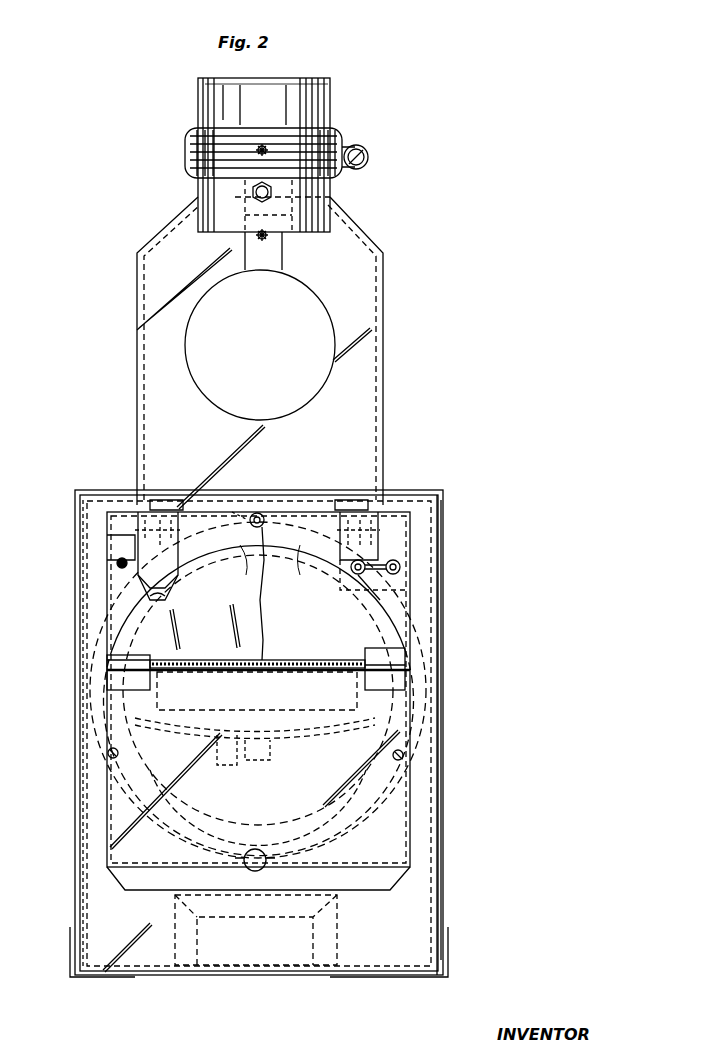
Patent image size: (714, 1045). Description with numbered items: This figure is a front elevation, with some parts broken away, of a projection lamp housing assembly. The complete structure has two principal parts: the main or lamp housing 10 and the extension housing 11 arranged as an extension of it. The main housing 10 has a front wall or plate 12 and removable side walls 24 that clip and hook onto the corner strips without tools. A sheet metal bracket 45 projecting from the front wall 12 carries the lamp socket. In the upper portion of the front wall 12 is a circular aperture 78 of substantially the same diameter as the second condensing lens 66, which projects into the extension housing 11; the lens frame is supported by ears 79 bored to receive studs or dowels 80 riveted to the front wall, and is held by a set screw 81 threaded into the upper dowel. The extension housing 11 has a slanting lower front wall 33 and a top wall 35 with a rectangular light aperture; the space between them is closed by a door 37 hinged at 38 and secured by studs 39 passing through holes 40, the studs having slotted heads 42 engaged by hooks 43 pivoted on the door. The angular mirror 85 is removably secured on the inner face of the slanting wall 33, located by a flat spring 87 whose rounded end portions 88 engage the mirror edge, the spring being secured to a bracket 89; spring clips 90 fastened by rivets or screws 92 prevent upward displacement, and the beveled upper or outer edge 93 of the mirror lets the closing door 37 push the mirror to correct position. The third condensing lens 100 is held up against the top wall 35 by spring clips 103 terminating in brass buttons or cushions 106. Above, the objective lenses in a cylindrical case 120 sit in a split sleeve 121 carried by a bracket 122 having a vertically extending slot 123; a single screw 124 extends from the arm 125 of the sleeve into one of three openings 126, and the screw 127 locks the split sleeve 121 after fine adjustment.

The main or lamp housing 10 is at (468, 681).
The extension housing 11 is at (408, 352).
The front wall or plate 12 is at (392, 926).
The removable side walls 24 is at (78, 795).
The slanting lower front wall 33 is at (258, 690).
The top wall 35 is at (195, 525).
The door 37 is at (380, 636).
The hinge 38 is at (108, 668).
The studs 39 is at (118, 567).
The holes 40 is at (400, 585).
The slotted heads 42 is at (400, 566).
The hooks 43 is at (378, 552).
The sheet metal bracket 45 is at (175, 920).
The second condensing lens 66 is at (110, 640).
The circular aperture 78 is at (256, 578).
The ears 79 is at (240, 512).
The studs or dowels 80 is at (246, 845).
The set screw 81 is at (262, 514).
The angular mirror 85 is at (265, 635).
The flat spring 87 is at (226, 760).
The rounded end portions 88 is at (133, 745).
The bracket 89 is at (265, 758).
The spring clips 90 is at (356, 707).
The rivets or screws 92 is at (402, 757).
The upper or outer edge 93 is at (205, 675).
The third condensing lens 100 is at (230, 600).
The spring clips 103 is at (107, 545).
The brass buttons or cushions 106 is at (158, 595).
The cylindrical case 120 is at (318, 112).
The split sleeve 121 is at (300, 150).
The bracket 122 is at (384, 280).
The vertically extending slot 123 is at (272, 262).
The screw 124 is at (257, 201).
The arm 125 is at (322, 197).
The openings 126 is at (262, 145).
The screw 127 is at (368, 160).